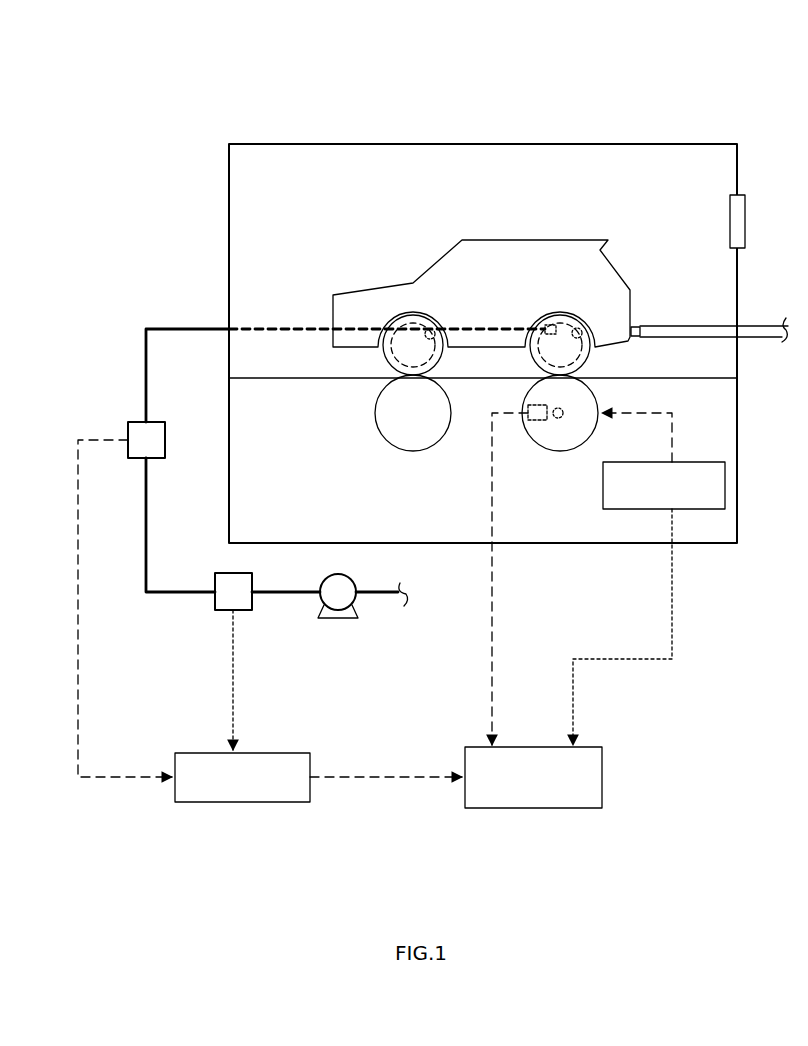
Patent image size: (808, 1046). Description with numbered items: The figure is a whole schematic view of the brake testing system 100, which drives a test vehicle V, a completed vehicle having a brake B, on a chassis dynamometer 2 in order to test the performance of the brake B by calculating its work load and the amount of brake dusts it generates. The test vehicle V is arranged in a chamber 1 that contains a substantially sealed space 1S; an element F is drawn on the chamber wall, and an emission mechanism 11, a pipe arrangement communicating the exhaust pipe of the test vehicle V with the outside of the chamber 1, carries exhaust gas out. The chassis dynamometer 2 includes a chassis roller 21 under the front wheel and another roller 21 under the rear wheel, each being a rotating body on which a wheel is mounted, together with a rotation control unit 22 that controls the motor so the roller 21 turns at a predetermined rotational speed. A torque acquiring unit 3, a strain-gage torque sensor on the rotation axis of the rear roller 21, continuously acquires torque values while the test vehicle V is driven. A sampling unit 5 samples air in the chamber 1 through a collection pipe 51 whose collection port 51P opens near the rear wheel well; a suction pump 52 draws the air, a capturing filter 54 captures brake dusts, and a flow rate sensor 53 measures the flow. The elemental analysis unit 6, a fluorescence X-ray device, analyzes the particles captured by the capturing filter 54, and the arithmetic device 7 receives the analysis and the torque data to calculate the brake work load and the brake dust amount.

The brake testing system 100 is at (160, 92).
The chamber 1 is at (657, 143).
The sealed space 1S is at (584, 192).
The test vehicle V is at (448, 242).
The filter F is at (747, 222).
The chassis dynamometer 2 is at (714, 411).
The chassis roller 21 is at (380, 430).
The rotation control unit 22 is at (726, 487).
The torque acquiring unit 3 is at (540, 424).
The brake B is at (395, 355).
The emission mechanism 11 is at (682, 324).
The sampling unit 5 is at (128, 332).
The collection pipe 51 is at (185, 327).
The collection port 51P is at (543, 322).
The suction pump 52 is at (338, 622).
The flow rate sensor 53 is at (228, 612).
The capturing filter 54 is at (157, 420).
The elemental analysis unit 6 is at (208, 805).
The arithmetic device 7 is at (492, 810).